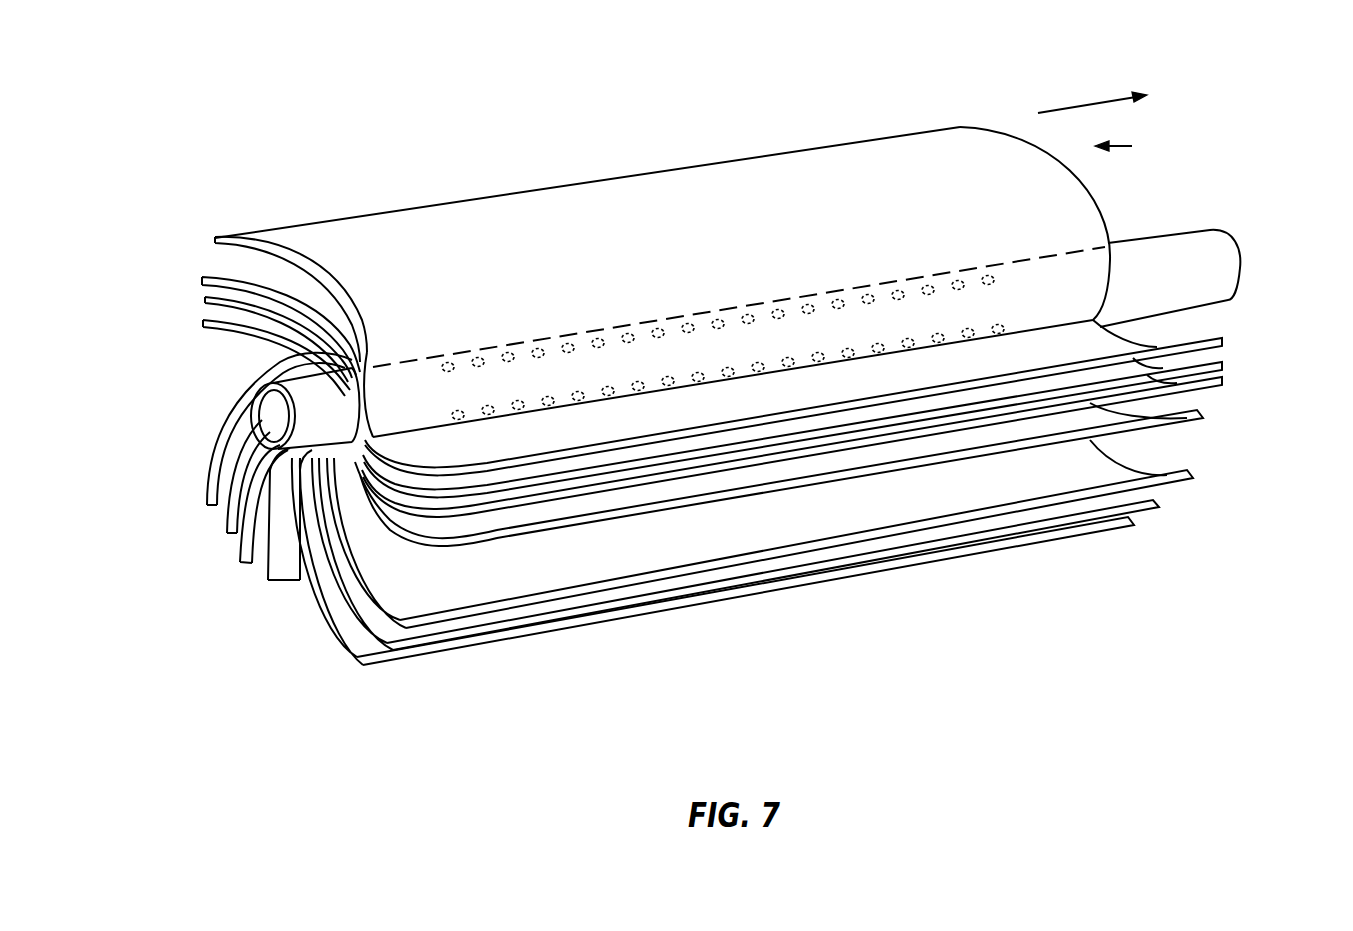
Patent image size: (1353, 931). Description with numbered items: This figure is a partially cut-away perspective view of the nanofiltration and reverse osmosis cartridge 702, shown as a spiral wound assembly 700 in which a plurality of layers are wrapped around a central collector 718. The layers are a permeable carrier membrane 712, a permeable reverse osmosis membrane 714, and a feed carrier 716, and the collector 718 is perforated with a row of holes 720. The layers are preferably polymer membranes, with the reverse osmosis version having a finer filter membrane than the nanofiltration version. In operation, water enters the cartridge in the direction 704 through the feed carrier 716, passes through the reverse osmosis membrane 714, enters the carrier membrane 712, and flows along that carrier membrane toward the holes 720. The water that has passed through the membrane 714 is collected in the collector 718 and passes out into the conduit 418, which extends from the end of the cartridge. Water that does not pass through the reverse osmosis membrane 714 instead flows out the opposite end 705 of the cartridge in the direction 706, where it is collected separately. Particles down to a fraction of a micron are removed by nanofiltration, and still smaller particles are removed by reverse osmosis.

The roll assembly 700 is at (225, 745).
The nanofiltration and reverse osmosis cartridge 702 is at (1247, 461).
The direction 704 is at (172, 297).
The end 705 is at (1132, 146).
The direction 706 is at (1068, 108).
The permeable carrier membrane 712 is at (428, 218).
The permeable reverse osmosis membrane 714 is at (257, 326).
The feed carrier 716 is at (308, 295).
The collector 718 is at (1017, 287).
The holes 720 is at (797, 288).
The conduit 418 is at (298, 385).